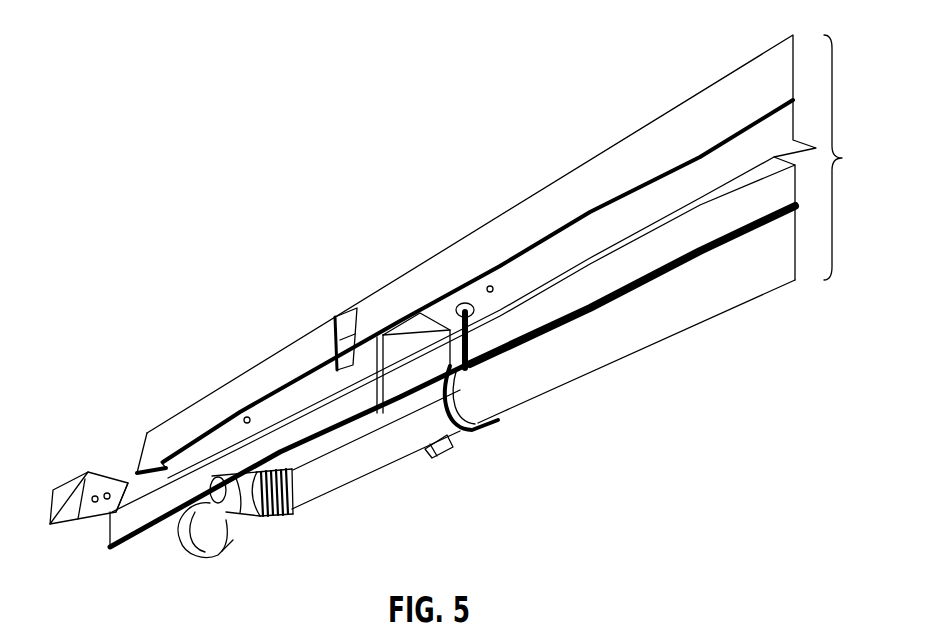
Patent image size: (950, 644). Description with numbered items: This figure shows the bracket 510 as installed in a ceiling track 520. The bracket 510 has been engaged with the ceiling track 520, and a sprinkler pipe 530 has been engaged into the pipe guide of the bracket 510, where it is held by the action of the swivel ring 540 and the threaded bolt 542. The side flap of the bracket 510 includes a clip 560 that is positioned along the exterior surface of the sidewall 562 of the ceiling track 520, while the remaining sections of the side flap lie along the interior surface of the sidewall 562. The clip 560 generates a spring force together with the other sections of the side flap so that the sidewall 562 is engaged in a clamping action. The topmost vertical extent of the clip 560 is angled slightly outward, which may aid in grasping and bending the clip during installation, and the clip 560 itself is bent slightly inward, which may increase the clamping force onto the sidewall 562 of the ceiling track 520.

The bracket 510 is at (355, 415).
The ceiling track 520 is at (521, 254).
The sprinkler pipe 530 is at (637, 340).
The swivel ring 540 is at (470, 427).
The threaded bolt 542 is at (438, 318).
The clip 560 is at (344, 335).
The sidewall 562 is at (370, 312).